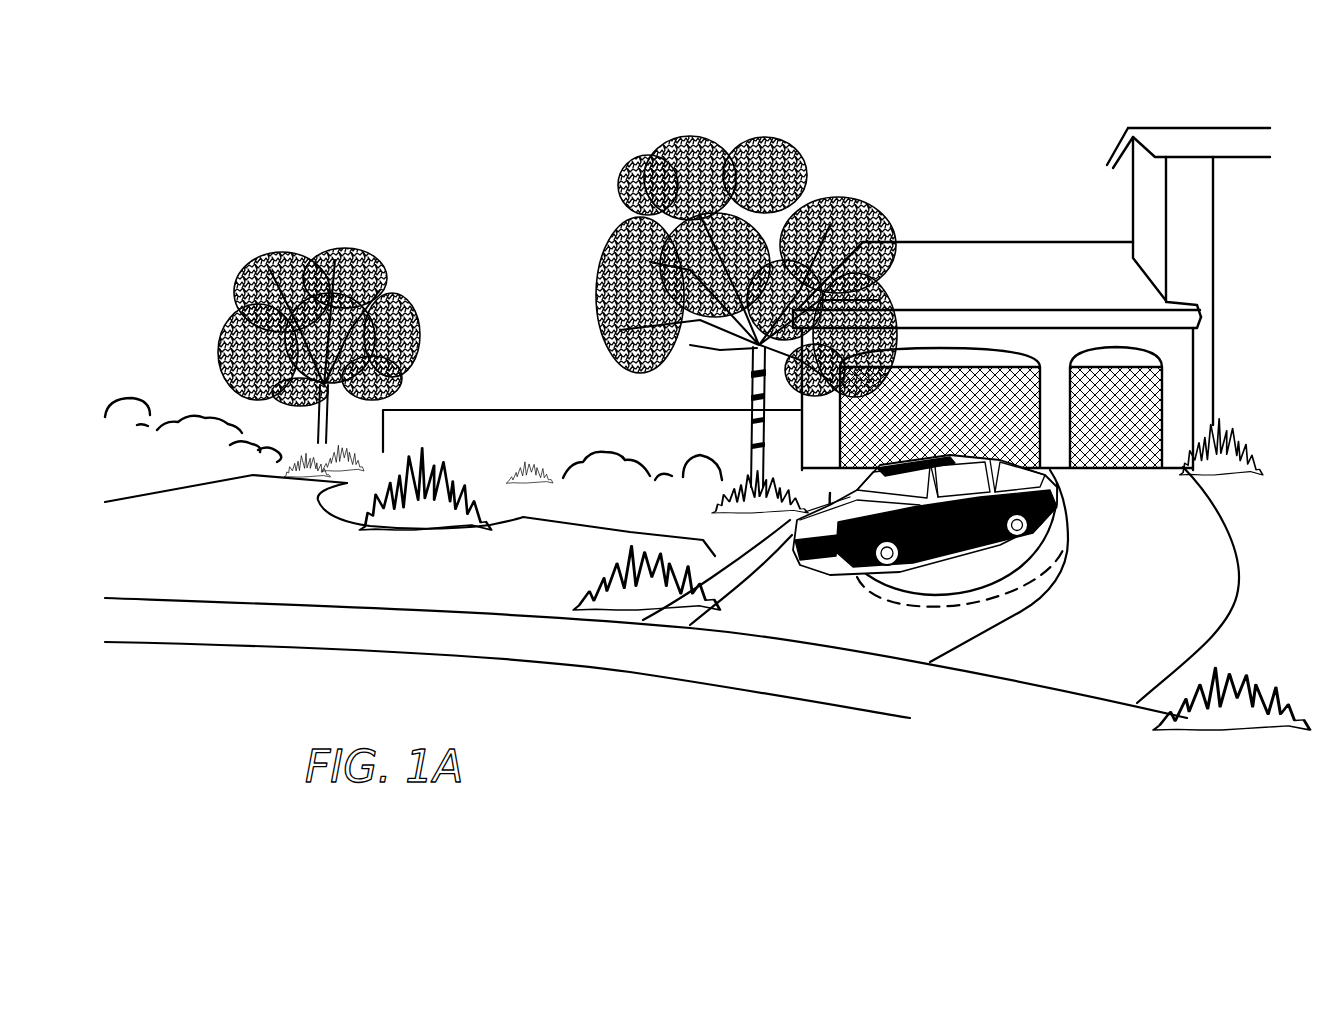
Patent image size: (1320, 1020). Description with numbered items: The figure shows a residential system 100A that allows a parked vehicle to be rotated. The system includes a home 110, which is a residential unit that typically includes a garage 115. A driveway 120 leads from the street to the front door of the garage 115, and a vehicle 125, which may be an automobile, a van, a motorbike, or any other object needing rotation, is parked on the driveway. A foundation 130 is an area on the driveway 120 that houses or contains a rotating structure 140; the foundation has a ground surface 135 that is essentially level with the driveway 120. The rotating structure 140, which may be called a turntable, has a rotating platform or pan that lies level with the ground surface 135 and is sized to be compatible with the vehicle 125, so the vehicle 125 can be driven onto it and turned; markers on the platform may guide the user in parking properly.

The residential system 100A is at (1199, 68).
The home 110 is at (913, 257).
The garage 115 is at (1007, 382).
The driveway 120 is at (787, 612).
The vehicle 125 is at (1053, 478).
The foundation 130 is at (947, 607).
The ground surface 135 is at (1057, 540).
The rotating structure 140 is at (1000, 567).